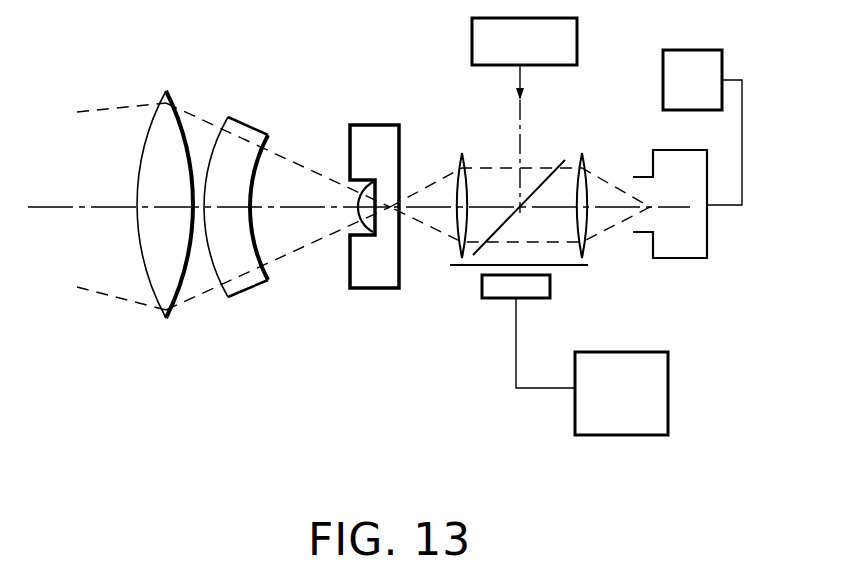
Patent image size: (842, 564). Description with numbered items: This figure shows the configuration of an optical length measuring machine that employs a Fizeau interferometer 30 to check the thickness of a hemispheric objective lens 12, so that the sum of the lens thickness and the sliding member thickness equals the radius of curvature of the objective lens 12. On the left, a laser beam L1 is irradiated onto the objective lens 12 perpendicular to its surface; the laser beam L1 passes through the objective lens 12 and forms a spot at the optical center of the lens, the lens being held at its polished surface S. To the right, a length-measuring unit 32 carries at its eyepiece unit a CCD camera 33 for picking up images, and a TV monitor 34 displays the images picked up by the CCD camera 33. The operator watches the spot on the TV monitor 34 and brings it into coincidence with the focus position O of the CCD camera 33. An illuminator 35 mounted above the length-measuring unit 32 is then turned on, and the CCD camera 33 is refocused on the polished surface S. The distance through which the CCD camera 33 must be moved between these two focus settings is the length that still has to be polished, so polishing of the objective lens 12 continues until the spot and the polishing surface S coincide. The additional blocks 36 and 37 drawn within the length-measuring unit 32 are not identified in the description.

The Fizeau interferometer 30 is at (66, 101).
The laser beam L1 is at (181, 197).
The objective lens 12 is at (357, 198).
The polished surface S is at (408, 194).
The focus position O is at (388, 186).
The illuminator 35 is at (476, 48).
The TV monitor 34 is at (672, 81).
The CCD camera 33 is at (677, 253).
The sensor 36 is at (492, 292).
The processing unit 37 is at (660, 384).
The length-measuring unit 32 is at (455, 450).